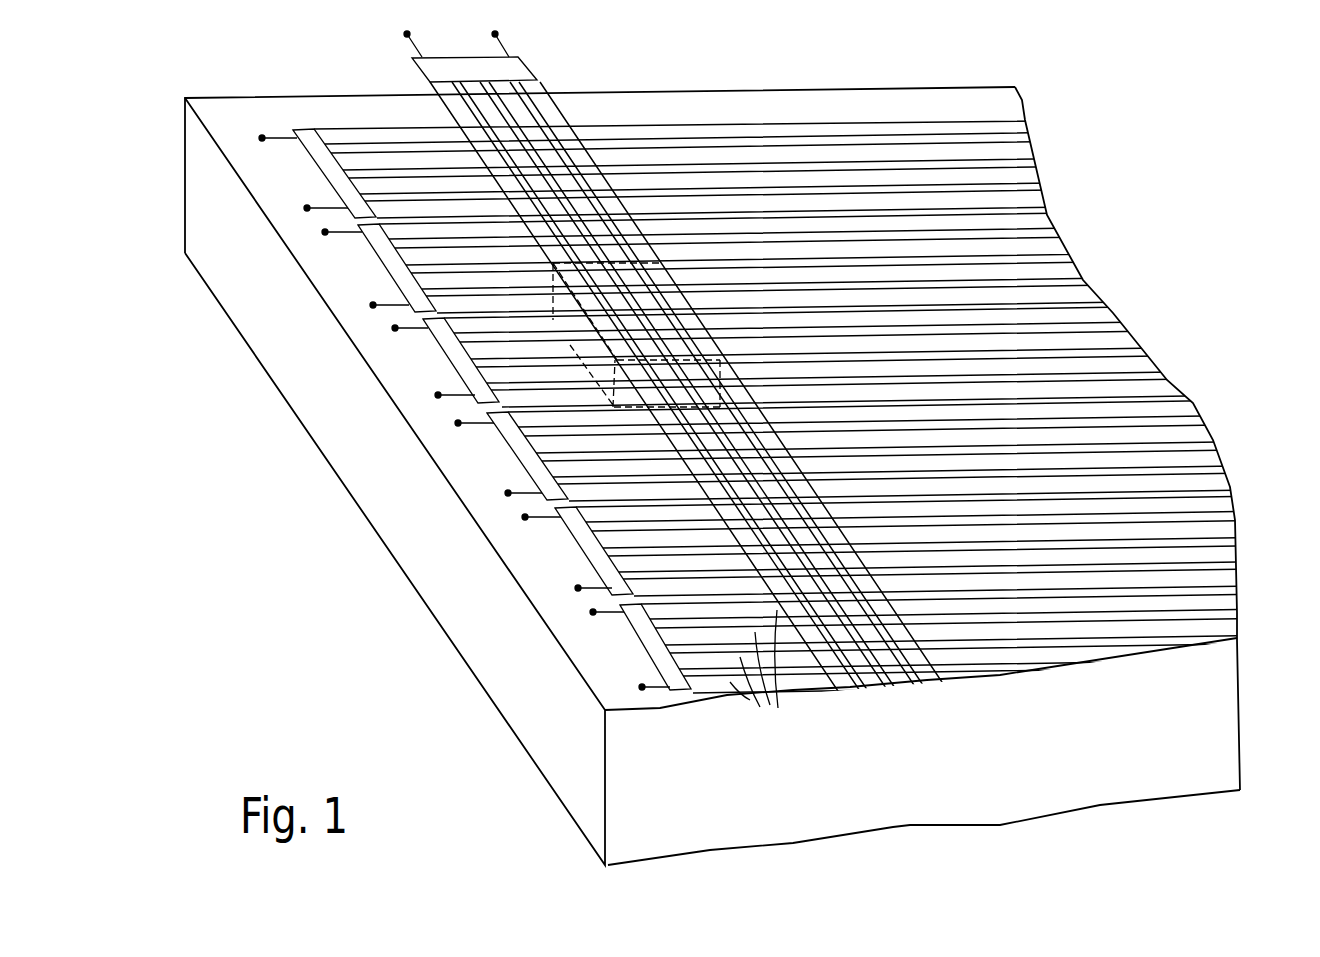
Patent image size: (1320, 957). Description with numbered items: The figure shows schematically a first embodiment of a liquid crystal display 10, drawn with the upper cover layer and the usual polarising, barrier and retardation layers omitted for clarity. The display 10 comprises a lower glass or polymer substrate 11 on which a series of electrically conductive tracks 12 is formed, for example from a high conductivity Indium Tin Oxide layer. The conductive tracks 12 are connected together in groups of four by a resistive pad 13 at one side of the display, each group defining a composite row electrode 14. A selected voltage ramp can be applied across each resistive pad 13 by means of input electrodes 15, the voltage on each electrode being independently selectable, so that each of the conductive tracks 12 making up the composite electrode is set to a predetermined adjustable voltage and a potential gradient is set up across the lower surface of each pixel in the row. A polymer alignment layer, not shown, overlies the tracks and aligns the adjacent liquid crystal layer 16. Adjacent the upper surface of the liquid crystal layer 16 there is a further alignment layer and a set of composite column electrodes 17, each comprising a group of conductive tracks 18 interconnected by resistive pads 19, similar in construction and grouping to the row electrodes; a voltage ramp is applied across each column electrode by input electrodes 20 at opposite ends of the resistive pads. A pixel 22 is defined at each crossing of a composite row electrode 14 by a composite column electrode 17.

The LCD display 10 is at (346, 598).
The lower glass or polymer substrate 11 is at (495, 680).
The conductive tracks 12 is at (754, 677).
The resistive pad 13 is at (325, 172).
The composite row electrode 14 is at (1113, 310).
The input electrodes 15 is at (262, 138).
The liquid crystal layer 16 is at (450, 128).
The composite column electrodes 17 is at (843, 690).
The conductive tracks 18 is at (562, 127).
The resistive pads 19 is at (518, 73).
The input electrodes 20 is at (405, 36).
The pixel 22 is at (700, 332).